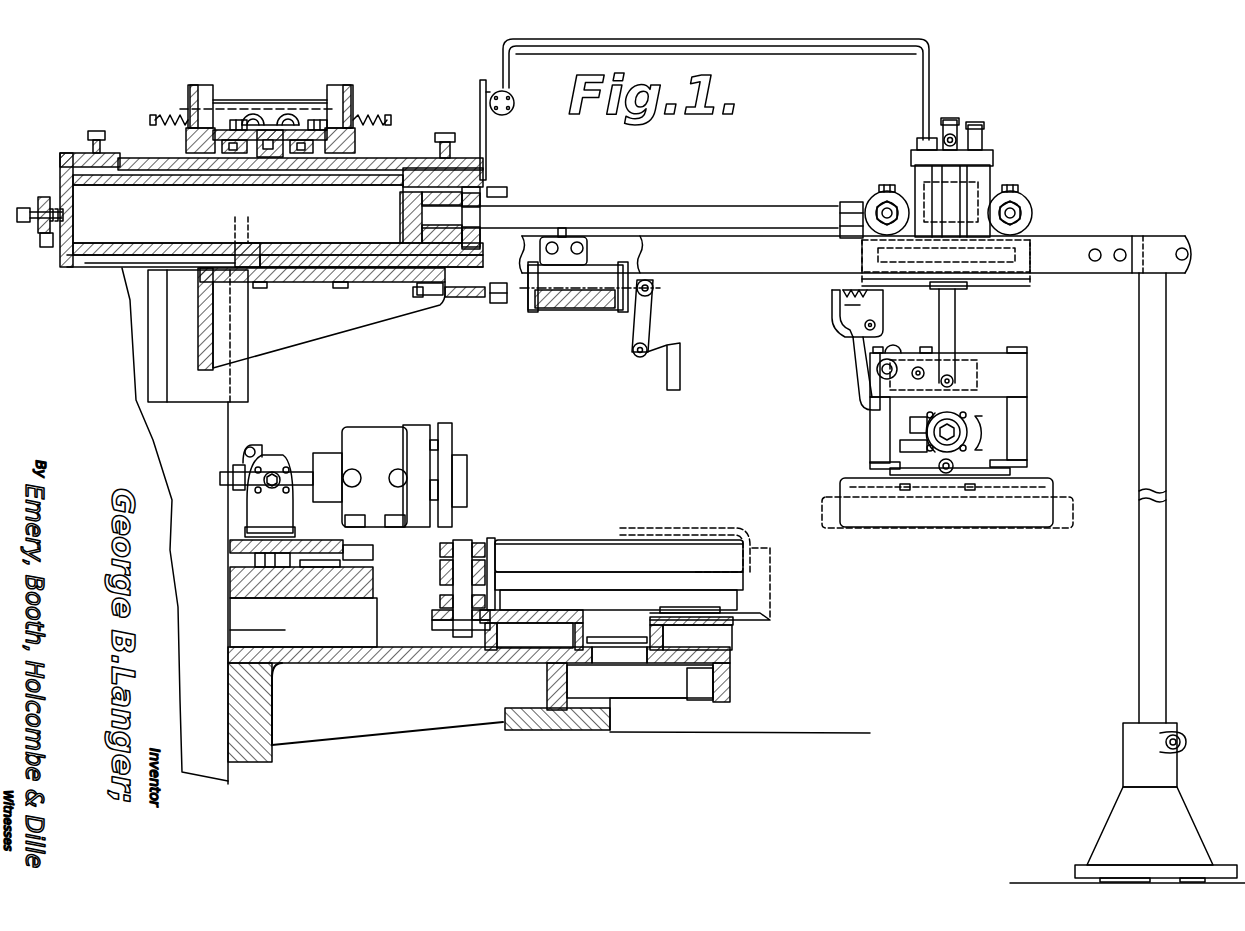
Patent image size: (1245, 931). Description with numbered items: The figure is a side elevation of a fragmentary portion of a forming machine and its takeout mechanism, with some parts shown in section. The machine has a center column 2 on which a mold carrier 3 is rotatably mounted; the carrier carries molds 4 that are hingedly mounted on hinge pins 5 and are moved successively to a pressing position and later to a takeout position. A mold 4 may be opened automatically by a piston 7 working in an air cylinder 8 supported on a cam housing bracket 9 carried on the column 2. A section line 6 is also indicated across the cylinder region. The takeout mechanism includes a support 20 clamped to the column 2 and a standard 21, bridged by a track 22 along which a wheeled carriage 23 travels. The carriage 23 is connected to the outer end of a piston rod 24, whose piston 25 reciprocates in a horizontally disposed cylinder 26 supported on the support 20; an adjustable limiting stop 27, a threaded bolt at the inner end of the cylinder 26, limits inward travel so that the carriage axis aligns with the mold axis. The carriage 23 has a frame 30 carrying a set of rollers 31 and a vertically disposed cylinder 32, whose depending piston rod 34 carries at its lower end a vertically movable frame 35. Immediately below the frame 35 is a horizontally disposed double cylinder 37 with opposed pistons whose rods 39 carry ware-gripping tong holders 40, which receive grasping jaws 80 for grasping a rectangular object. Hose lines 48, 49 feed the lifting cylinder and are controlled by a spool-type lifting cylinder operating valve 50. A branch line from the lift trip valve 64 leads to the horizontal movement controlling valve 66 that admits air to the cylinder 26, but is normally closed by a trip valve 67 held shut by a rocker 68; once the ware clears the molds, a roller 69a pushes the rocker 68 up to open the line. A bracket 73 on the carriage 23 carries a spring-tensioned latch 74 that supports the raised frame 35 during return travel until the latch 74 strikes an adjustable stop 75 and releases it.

The center column 2 is at (210, 438).
The mold carrier 3 is at (950, 180).
The mold 4 is at (496, 560).
The hinge pin 5 is at (460, 570).
The section line 6- 6 is at (519, 335).
The piston 7 is at (299, 469).
The air cylinder 8 is at (367, 434).
The cam housing bracket 9 is at (300, 548).
The support 20 is at (377, 322).
The standard 21 is at (1163, 392).
The track 22 is at (778, 258).
The wheeled carriage 23 is at (1045, 231).
The piston rod 24 is at (737, 192).
The piston 25 is at (490, 186).
The cylinder 26 is at (271, 199).
The adjustable limiting stop 27 is at (21, 224).
The frame 30 is at (1038, 285).
The rollers 31 is at (876, 193).
The cylinder 32 is at (995, 178).
The piston rod 34 is at (962, 333).
The frame 35 is at (990, 372).
The double cylinder 37 is at (982, 422).
The rods 39 is at (982, 434).
The ware-gripping tong holders 40 is at (975, 458).
The hose line 48 is at (798, 58).
The hose line 49 is at (770, 38).
The lifting cylinder operating valve 50 is at (490, 88).
The lift trip valve 64 is at (906, 411).
The horizontal movement controlling valve 66 is at (263, 104).
The trip valve 67 is at (582, 313).
The rocker 68 is at (659, 360).
The roller 69a is at (882, 381).
The bracket 73 is at (884, 300).
The latch 74 is at (845, 341).
The adjustable stop 75 is at (505, 304).
The grasping jaw 80 is at (902, 506).